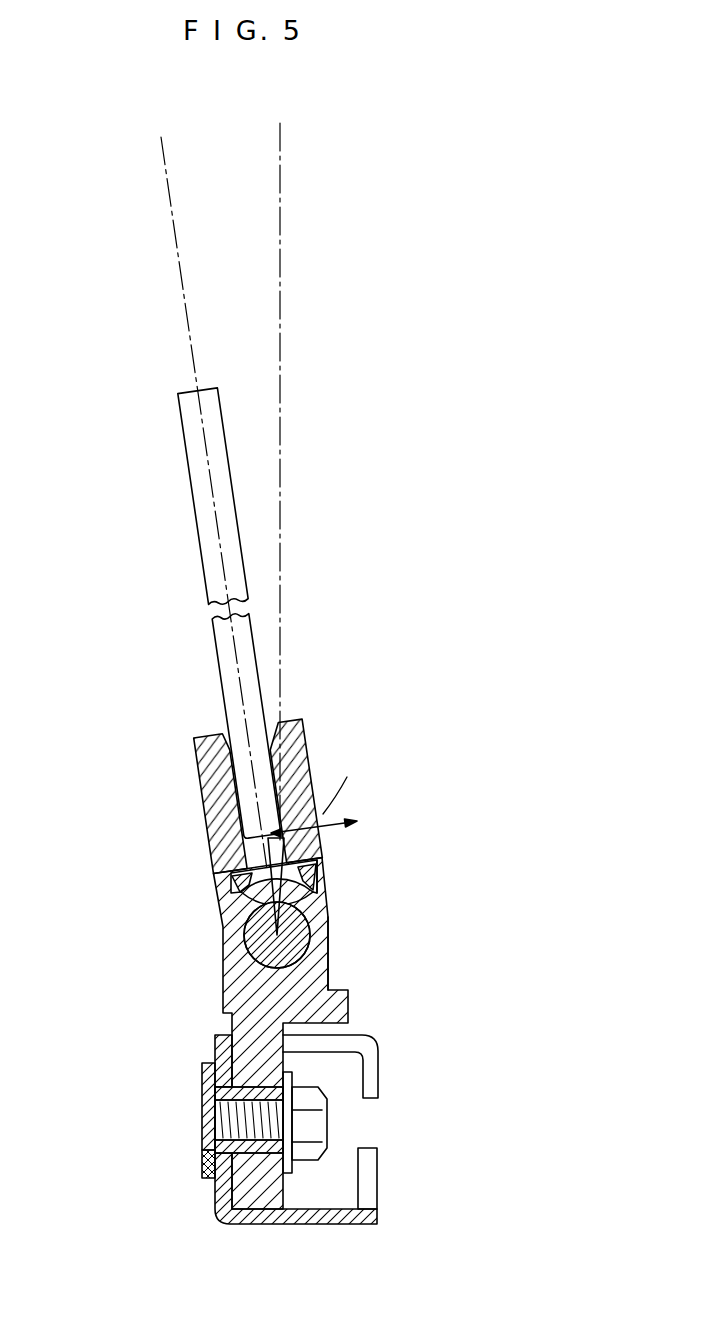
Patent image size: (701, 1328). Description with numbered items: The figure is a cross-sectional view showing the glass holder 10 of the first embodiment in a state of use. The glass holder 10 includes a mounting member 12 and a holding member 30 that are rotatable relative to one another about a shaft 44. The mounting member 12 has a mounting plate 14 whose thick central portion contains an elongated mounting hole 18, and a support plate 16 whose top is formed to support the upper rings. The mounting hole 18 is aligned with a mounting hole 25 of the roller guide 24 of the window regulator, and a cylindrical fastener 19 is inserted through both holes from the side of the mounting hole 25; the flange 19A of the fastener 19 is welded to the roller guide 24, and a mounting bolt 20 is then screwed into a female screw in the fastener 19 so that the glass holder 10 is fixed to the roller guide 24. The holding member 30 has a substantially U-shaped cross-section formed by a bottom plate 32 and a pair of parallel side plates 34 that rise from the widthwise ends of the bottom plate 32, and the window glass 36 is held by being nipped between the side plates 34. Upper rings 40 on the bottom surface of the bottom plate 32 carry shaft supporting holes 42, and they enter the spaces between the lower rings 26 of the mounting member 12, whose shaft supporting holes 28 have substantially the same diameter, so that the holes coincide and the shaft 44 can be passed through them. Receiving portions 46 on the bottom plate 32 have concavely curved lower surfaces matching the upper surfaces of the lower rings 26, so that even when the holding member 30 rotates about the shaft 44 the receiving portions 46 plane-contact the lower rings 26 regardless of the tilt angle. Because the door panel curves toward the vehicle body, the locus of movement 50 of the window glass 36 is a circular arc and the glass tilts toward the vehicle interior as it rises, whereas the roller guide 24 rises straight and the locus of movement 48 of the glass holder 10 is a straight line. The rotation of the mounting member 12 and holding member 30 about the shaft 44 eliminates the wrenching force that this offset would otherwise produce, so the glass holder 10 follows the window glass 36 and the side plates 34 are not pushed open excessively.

The glass holder 10 is at (267, 833).
The mounting member 12 is at (289, 1191).
The mounting plate 14 is at (245, 1044).
The support plate 16 is at (278, 1022).
The mounting hole 18 is at (205, 1112).
The fastener 19 is at (200, 1133).
The flange 19A is at (198, 1062).
The mounting bolt 20 is at (313, 1122).
The roller guide 24 is at (377, 1220).
The mounting hole 25 is at (198, 1163).
The lower rings 26 is at (320, 933).
The shaft supporting holes 28 is at (245, 946).
The holding member 30 is at (230, 631).
The bottom plate 32 is at (218, 857).
The side plates 34 is at (203, 758).
The window glass 36 is at (215, 656).
The upper rings 40 is at (328, 890).
The shaft supporting holes 42 is at (193, 935).
The shaft 44 is at (334, 973).
The receiving portions 46 is at (238, 880).
The locus of movement 48 is at (280, 213).
The locus of movement 50 is at (166, 166).